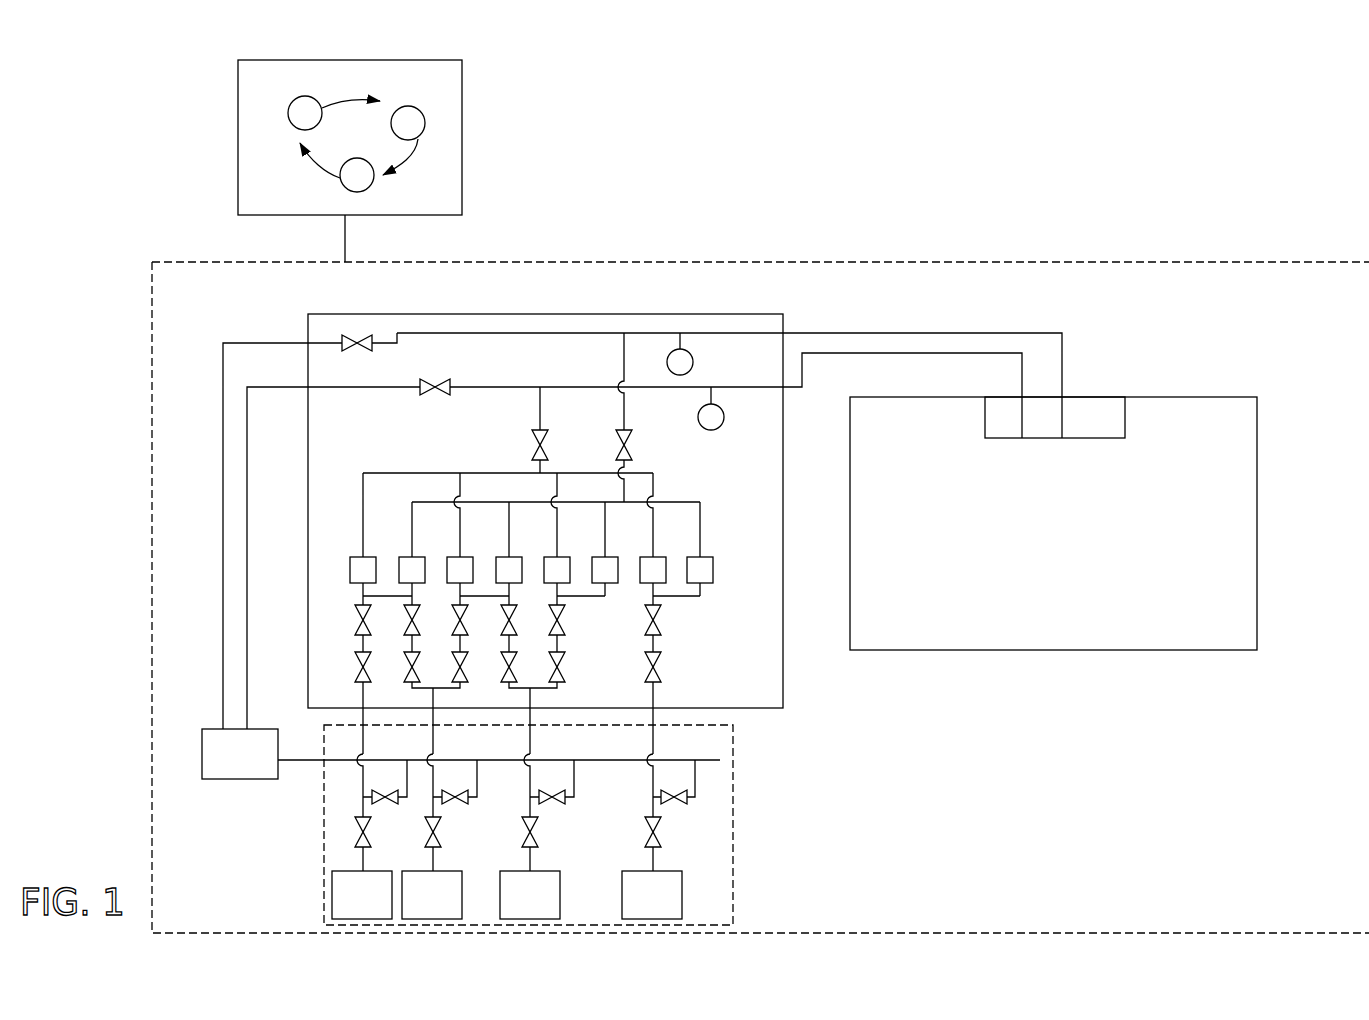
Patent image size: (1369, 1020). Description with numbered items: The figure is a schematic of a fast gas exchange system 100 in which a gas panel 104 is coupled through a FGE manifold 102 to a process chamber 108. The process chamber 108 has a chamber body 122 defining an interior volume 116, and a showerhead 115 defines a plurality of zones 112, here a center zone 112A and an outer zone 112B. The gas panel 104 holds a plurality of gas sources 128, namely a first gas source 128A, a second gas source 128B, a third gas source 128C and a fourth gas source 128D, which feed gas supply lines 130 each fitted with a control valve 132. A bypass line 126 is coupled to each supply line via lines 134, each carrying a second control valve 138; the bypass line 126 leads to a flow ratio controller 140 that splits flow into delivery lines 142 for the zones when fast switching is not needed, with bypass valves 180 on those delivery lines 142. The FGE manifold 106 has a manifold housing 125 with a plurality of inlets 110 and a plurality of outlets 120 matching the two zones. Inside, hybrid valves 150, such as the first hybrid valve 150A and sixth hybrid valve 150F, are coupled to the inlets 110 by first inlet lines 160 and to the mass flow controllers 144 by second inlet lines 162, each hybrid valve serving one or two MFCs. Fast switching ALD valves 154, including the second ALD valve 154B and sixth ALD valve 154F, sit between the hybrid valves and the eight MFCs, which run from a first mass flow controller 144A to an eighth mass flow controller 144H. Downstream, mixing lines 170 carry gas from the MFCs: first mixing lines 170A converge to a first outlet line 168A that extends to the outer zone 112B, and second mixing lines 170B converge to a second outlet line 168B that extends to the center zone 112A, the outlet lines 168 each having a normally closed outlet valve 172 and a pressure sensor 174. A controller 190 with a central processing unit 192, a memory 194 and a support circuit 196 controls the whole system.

The fast gas exchange system 100 is at (175, 138).
The FGE manifold 102 is at (792, 290).
The gas panel 104 is at (735, 890).
The FGE manifold 106 is at (795, 660).
The process chamber 108 is at (1087, 493).
The inlets 110 is at (358, 708).
The zones 112 is at (1061, 383).
The center zone 112A is at (1062, 405).
The outer zone 112B is at (1022, 405).
The showerhead 115 is at (1125, 420).
The interior volume 116 is at (1047, 533).
The outlets 120 is at (790, 333).
The chamber body 122 is at (1257, 515).
The manifold housing 125 is at (785, 692).
The bypass line 126 is at (592, 760).
The gas sources 128 is at (460, 888).
The first gas source 128A is at (362, 895).
The second gas source 128B is at (432, 895).
The third gas source 128C is at (530, 895).
The fourth gas source 128D is at (652, 895).
The gas supply lines 130 is at (360, 742).
The control valve 132 is at (360, 832).
The lines 134 is at (476, 778).
The second control valve 138 is at (383, 804).
The flow ratio controller 140 is at (240, 754).
The delivery lines 142 is at (247, 520).
The mass flow controllers 144 is at (550, 531).
The first mass flow controller 144A is at (350, 578).
The eighth mass flow controller 144H is at (713, 568).
The hybrid valves 150 is at (502, 649).
The first hybrid valve 150A is at (360, 668).
The sixth hybrid valve 150F is at (650, 668).
The ALD valves 154 is at (503, 603).
The second ALD valve 154B is at (405, 632).
The sixth ALD valve 154F is at (650, 623).
The first inlet lines 160 is at (375, 695).
The second inlet lines 162 is at (393, 550).
The outlet lines 168 is at (530, 468).
The first outlet line 168A is at (740, 388).
The second outlet line 168B is at (728, 333).
The mixing lines 170 is at (657, 472).
The first mixing lines 170A is at (508, 481).
The second mixing lines 170B is at (413, 548).
The outlet valves 172 is at (620, 445).
The pressure sensor 174 is at (674, 350).
The bypass valves 180 is at (350, 343).
The controller 190 is at (382, 138).
The central processing unit 192 is at (305, 96).
The memory 194 is at (424, 112).
The support circuit 196 is at (350, 188).